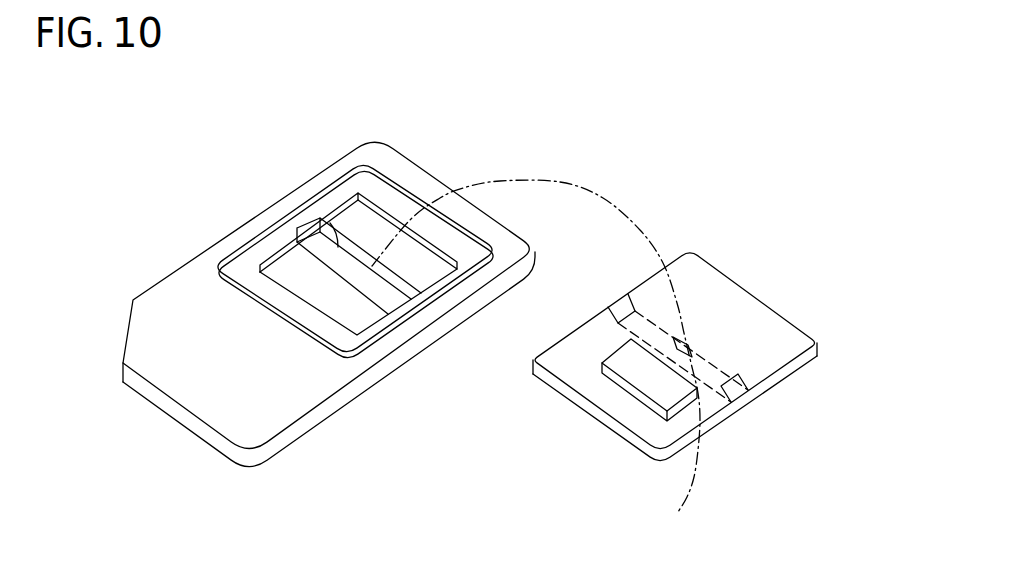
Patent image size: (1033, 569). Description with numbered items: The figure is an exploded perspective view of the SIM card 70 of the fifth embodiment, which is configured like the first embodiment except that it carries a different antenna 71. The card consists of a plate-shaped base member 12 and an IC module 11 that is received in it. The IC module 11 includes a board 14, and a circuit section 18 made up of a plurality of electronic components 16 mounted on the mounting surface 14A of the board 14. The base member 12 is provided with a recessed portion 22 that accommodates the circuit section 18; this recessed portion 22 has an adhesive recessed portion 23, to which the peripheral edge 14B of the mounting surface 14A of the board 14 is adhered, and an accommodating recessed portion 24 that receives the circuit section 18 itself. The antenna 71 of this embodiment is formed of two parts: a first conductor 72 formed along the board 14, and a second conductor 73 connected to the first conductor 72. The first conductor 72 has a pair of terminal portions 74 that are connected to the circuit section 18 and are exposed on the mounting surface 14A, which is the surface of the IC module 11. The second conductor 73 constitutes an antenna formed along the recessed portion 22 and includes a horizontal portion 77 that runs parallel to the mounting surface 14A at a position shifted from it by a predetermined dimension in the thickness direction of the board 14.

The IC module 11 is at (692, 252).
The base member 12 is at (430, 170).
The board 14 is at (788, 318).
The mounting surface 14A is at (727, 300).
The peripheral edge 14B is at (567, 350).
The electronic component 16 is at (603, 373).
The circuit section 18 is at (617, 400).
The recessed portion 22 is at (358, 179).
The adhesive recessed portion 23 is at (369, 189).
The accommodating recessed portion 24 is at (368, 232).
The SIM card 70 is at (589, 161).
The antenna 71 is at (327, 267).
The first conductor 72 is at (367, 272).
The second conductor 73 is at (371, 290).
The terminal portion 74 is at (605, 318).
The horizontal portion 77 is at (330, 223).